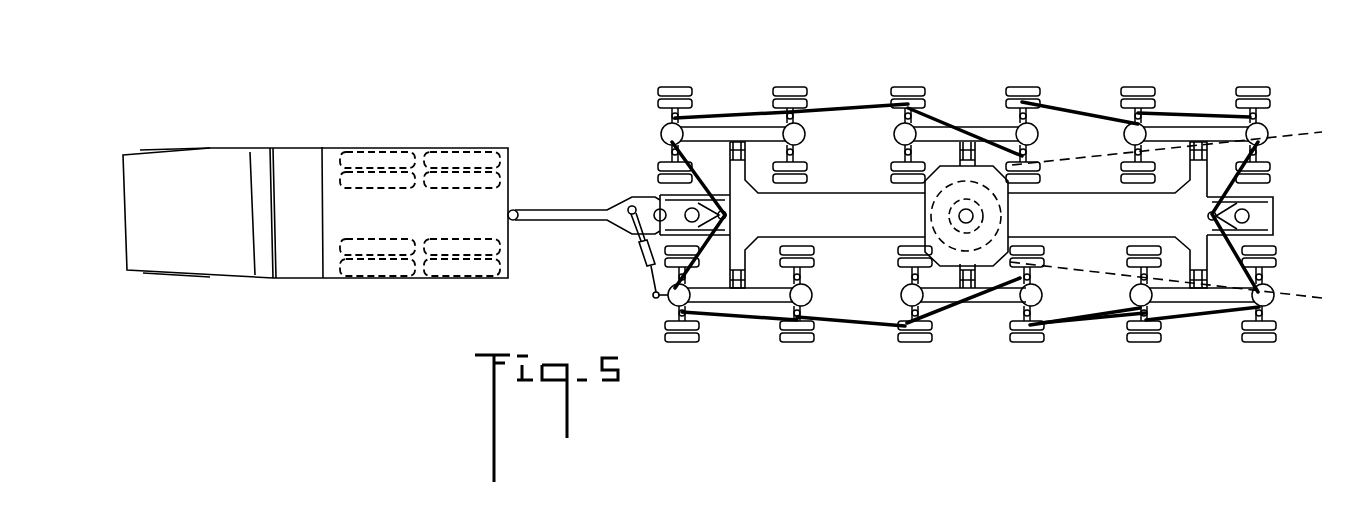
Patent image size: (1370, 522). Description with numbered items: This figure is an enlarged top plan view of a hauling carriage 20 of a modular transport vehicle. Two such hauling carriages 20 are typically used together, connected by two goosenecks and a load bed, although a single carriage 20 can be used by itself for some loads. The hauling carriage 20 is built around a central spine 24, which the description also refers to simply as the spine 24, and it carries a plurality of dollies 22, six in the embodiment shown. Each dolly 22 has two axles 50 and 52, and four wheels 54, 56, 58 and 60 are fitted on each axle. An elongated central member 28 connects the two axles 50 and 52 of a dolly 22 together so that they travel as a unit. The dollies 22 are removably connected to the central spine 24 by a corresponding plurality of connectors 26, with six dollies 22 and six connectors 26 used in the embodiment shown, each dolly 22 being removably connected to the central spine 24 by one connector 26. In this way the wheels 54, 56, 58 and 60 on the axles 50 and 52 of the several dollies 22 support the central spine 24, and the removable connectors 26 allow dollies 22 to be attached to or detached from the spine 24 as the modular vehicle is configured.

The hauling carriage 20 is at (636, 87).
The dolly 22 is at (741, 86).
The central spine 24 is at (880, 218).
The connector 26 is at (730, 145).
The elongated central member 28 is at (997, 305).
The axle 50 is at (913, 350).
The axle 52 is at (1026, 348).
The wheel 54 is at (893, 334).
The wheel 56 is at (908, 343).
The wheel 58 is at (1040, 345).
The wheel 60 is at (1047, 347).